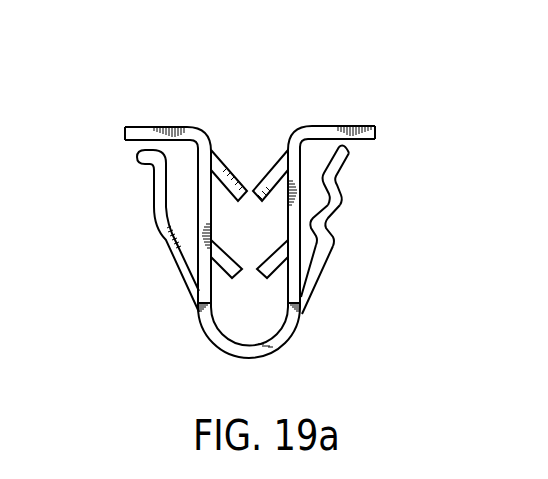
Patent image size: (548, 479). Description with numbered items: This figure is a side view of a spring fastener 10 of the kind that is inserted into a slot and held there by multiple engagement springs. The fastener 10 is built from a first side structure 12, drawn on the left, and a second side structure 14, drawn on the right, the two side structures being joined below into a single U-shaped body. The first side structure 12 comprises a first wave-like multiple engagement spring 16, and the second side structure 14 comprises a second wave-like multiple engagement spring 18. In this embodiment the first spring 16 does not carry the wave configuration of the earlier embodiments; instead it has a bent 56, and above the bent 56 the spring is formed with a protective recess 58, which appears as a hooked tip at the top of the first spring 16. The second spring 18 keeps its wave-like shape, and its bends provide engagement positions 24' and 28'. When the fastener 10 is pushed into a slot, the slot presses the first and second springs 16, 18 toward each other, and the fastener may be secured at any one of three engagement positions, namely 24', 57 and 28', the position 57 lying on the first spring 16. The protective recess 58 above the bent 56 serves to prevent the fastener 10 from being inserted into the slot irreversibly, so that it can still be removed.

The spring fastener 10 is at (220, 86).
The first side structure 12 is at (118, 285).
The second side structure 14 is at (356, 267).
The first wave-like multiple engagement spring 16 is at (181, 277).
The second wave-like multiple engagement spring 18 is at (310, 290).
The engagement position 24' is at (362, 217).
The engagement position 28' is at (374, 175).
The bent 56 is at (157, 220).
The engagement position 57 is at (153, 197).
The protective recess 58 is at (153, 172).